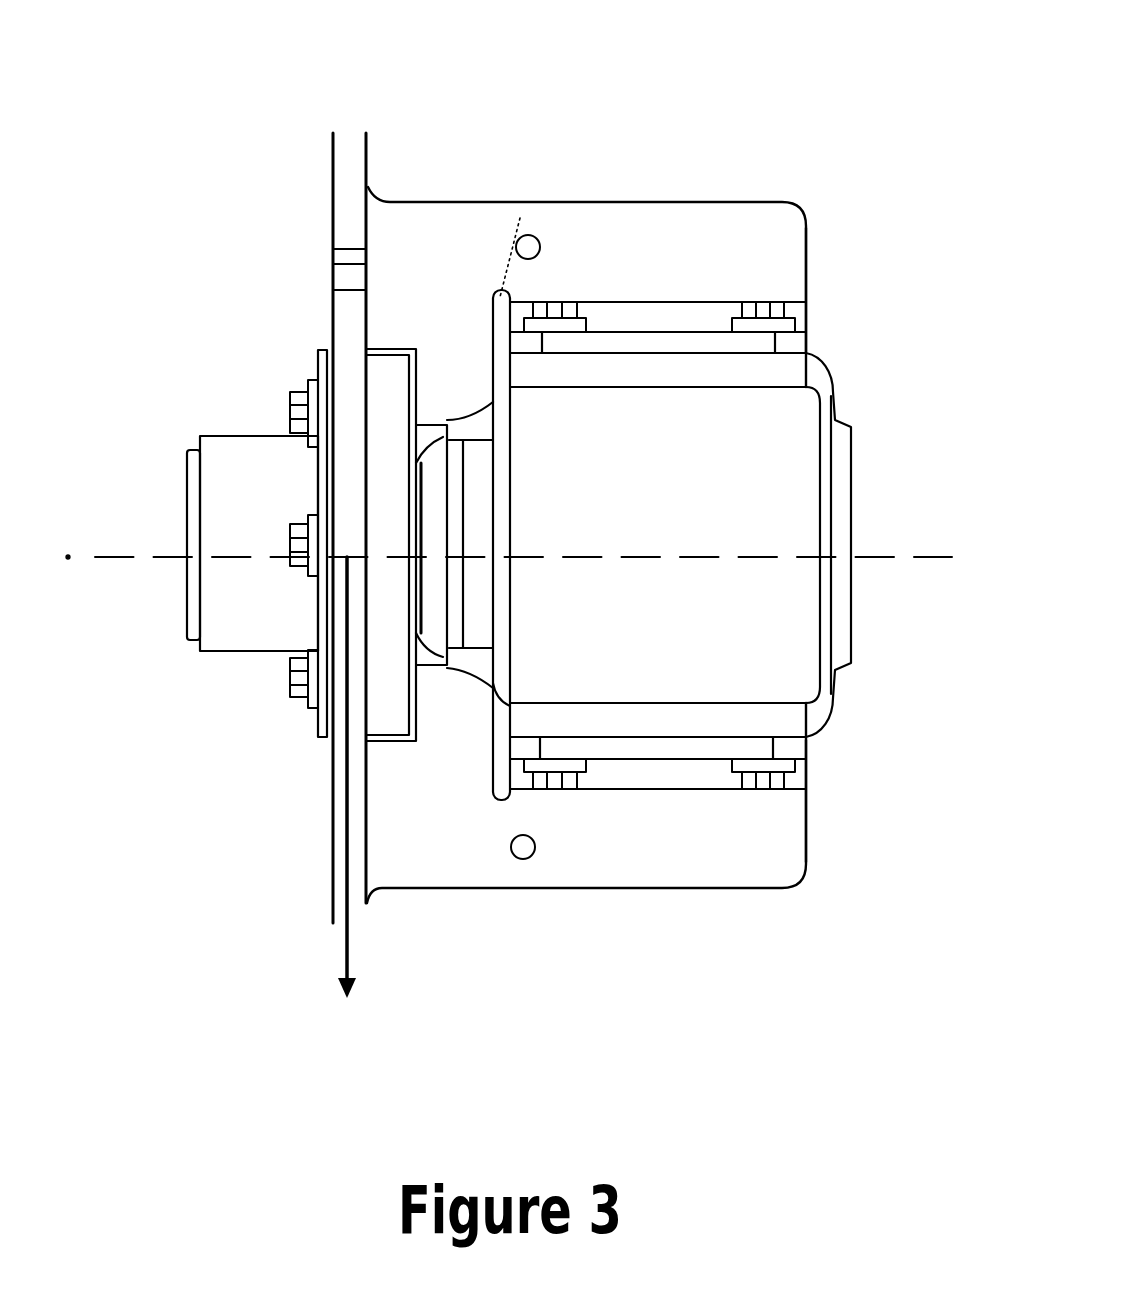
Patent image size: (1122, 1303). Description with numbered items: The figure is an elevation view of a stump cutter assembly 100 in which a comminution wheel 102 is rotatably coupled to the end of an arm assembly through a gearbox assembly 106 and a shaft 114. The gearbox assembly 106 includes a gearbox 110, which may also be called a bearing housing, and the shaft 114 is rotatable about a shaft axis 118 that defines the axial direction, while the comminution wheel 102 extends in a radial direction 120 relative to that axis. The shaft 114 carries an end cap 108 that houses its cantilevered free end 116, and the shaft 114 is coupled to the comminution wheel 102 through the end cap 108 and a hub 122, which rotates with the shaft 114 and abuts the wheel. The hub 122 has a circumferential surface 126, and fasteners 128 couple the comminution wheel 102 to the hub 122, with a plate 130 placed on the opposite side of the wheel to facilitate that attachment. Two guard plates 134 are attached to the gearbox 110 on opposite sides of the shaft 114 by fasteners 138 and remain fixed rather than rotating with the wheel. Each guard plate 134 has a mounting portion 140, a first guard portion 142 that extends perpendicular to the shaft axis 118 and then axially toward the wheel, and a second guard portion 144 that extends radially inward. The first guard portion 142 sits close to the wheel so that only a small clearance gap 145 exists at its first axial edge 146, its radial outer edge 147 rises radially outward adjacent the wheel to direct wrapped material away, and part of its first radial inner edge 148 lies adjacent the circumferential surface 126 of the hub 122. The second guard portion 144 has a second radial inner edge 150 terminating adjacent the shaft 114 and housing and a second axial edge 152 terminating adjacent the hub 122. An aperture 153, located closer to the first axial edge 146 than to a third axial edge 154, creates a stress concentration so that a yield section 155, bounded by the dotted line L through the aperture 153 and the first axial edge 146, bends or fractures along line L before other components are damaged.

The stump cutter assembly 100 is at (861, 118).
The comminution wheel 102 is at (343, 172).
The gearbox assembly 106 is at (864, 475).
The end cap 108 is at (215, 617).
The gearbox 110 is at (767, 427).
The shaft 114 is at (412, 538).
The free end 116 is at (183, 483).
The shaft axis 118 is at (877, 558).
The radial direction 120 is at (342, 955).
The hub 122 is at (390, 453).
The circumferential surface 126 is at (390, 663).
The fasteners 128 is at (297, 668).
The plate 130 is at (327, 727).
The guard plate 134 is at (680, 194).
The fasteners 138 is at (763, 308).
The mounting portion 140 is at (668, 748).
The first guard portion 142 is at (725, 239).
The second guard portion 144 is at (457, 367).
The clearance gap 145 is at (357, 893).
The first axial edge 146 is at (358, 307).
The radial outer edge 147 is at (441, 896).
The first radial inner edge 148 is at (388, 366).
The second radial inner edge 150 is at (504, 699).
The second axial edge 152 is at (401, 710).
The aperture 153 is at (535, 853).
The third axial edge 154 is at (810, 270).
The yield section 155 is at (437, 257).
The dotted line L is at (520, 220).